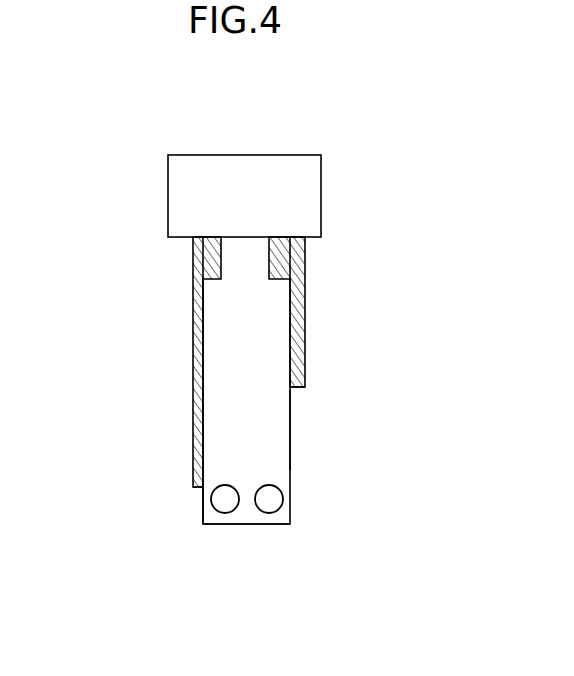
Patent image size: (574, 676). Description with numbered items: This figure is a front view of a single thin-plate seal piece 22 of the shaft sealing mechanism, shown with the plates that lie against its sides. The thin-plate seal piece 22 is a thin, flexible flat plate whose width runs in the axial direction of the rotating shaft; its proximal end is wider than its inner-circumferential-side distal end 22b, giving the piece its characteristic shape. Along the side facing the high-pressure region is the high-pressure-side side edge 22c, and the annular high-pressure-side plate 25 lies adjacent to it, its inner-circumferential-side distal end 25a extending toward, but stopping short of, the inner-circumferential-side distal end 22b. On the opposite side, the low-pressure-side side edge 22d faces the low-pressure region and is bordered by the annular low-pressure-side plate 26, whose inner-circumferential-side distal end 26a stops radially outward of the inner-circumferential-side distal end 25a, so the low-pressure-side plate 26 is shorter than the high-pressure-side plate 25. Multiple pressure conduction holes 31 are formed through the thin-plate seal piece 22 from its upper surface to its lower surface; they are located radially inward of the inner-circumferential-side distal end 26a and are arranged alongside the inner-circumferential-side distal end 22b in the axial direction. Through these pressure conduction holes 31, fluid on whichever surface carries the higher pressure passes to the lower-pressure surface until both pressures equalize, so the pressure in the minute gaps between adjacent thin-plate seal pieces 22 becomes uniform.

The thin-plate seal piece 22 is at (245, 151).
The inner-circumferential-side distal end 22b is at (283, 525).
The high-pressure-side side edge 22c is at (200, 512).
The low-pressure-side side edge 22d is at (290, 443).
The high-pressure-side plate 25 is at (191, 317).
The inner-circumferential-side distal end 25a is at (200, 490).
The low-pressure-side plate 26 is at (306, 291).
The inner-circumferential-side distal end 26a is at (292, 390).
The pressure conduction hole 31 is at (225, 503).